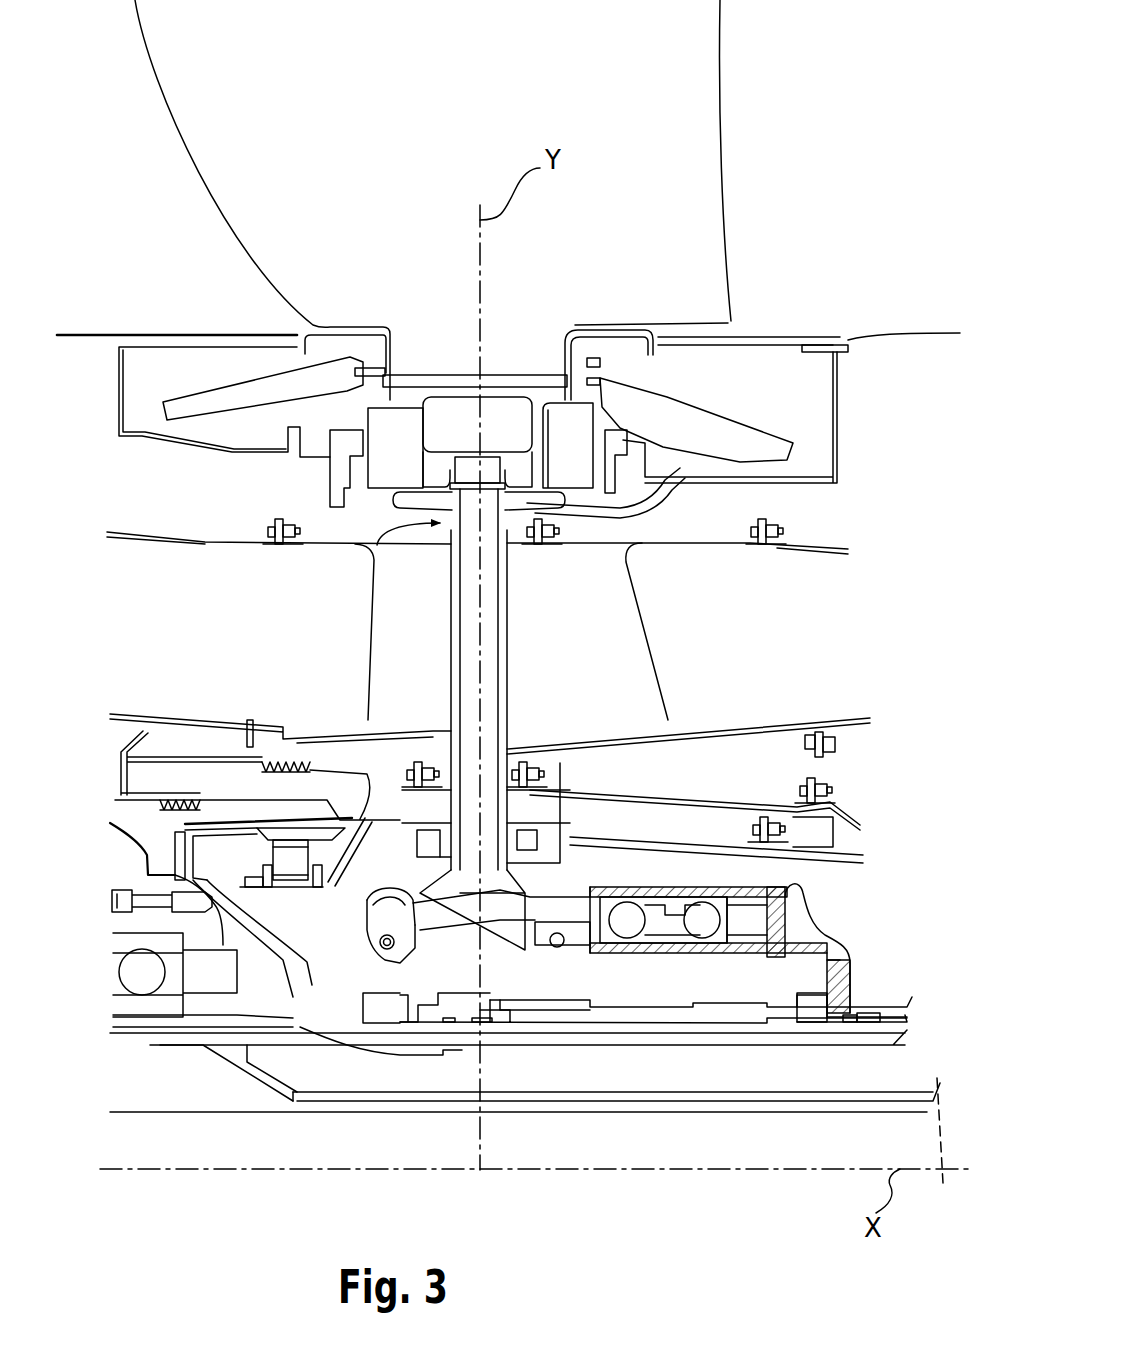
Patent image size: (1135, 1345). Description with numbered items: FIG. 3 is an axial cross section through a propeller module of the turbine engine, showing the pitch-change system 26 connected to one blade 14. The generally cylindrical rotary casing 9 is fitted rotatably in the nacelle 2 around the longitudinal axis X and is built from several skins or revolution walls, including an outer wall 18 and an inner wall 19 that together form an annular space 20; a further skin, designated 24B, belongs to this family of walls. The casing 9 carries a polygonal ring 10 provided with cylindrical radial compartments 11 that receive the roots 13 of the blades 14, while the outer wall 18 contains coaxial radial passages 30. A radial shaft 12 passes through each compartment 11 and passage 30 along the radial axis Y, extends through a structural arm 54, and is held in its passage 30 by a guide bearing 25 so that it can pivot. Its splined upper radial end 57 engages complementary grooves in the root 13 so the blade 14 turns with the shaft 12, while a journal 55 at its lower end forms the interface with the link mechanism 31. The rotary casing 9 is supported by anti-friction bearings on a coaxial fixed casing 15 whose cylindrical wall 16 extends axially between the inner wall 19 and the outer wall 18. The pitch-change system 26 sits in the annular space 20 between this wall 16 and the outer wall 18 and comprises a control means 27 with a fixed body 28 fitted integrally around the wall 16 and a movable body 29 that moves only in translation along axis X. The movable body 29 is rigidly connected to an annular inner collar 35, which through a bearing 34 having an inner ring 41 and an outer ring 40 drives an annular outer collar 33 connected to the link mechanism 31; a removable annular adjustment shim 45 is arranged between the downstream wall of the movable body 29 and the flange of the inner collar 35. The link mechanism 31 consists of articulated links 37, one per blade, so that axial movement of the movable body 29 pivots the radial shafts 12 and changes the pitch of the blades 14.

The nacelle 2 is at (920, 333).
The rotary casing 9 is at (848, 815).
The polygonal ring 10 is at (840, 390).
The radial compartment 11 is at (760, 372).
The radial shaft 12 is at (503, 660).
The root 13 is at (555, 388).
The blade 14 is at (700, 105).
The fixed cylindrical casing 15 is at (839, 1060).
The cylindrical wall 16 is at (397, 1052).
The outer wall 18 is at (708, 890).
The inner wall 19 is at (327, 1097).
The annular space 20 is at (837, 910).
The downstream flange 24B is at (845, 710).
The guide bearing 25 is at (490, 930).
The pitch-change system 26 is at (622, 965).
The control means 27 is at (867, 1013).
The fixed body 28 is at (757, 1020).
The movable body 29 is at (563, 1000).
The radial passage 30 is at (523, 850).
The link mechanism 31 is at (462, 948).
The annular outer collar 33 is at (722, 903).
The bearing 34 is at (697, 953).
The annular inner collar 35 is at (700, 942).
The articulated link 37 is at (520, 918).
The outer ring 40 is at (707, 890).
The inner ring 41 is at (650, 942).
The adjustment shim 45 is at (830, 985).
The structural arm 54 is at (405, 631).
The journal 55 is at (397, 953).
The upper radial end 57 is at (373, 560).